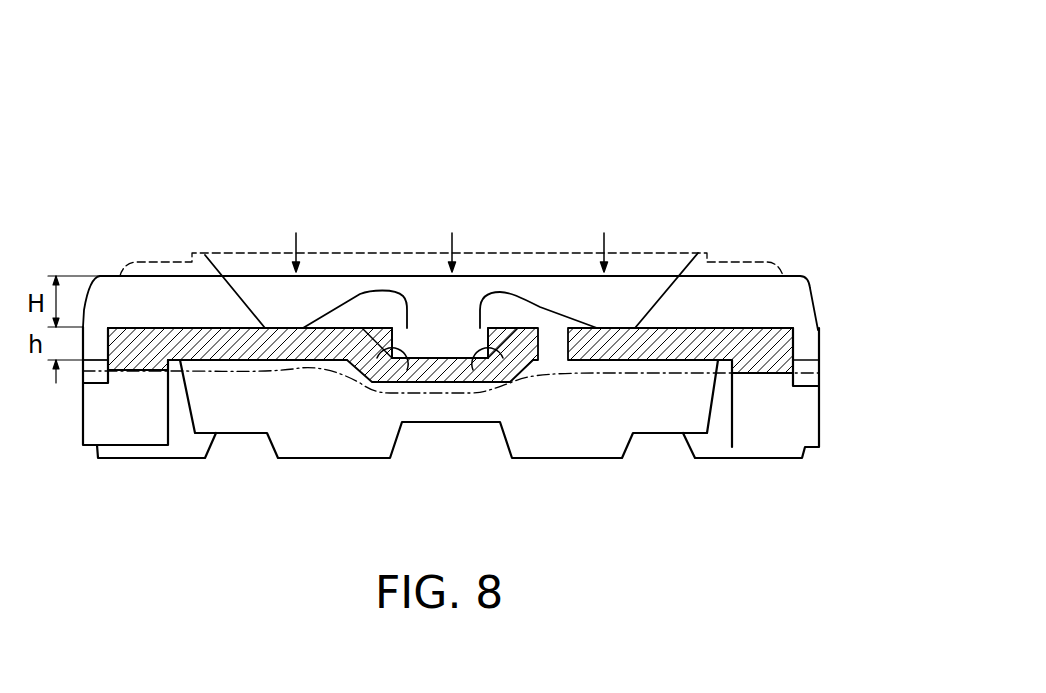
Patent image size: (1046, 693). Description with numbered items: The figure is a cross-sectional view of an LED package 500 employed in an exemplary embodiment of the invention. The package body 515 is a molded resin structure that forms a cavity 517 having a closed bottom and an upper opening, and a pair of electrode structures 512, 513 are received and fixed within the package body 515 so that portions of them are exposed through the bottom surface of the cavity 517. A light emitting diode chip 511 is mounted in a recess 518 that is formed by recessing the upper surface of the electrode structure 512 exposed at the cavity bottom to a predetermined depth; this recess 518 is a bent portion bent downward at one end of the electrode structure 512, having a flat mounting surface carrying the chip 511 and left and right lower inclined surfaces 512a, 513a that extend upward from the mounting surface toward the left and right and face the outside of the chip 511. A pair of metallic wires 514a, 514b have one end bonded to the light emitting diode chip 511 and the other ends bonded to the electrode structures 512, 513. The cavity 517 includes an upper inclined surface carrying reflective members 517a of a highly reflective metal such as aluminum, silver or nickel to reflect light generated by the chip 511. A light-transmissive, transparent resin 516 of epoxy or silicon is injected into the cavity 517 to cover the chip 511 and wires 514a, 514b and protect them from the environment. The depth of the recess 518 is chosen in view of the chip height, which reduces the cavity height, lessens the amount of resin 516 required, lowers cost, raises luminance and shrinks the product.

The LED package 500 is at (582, 148).
The light emitting diode chip 511 is at (435, 338).
The electrode structure 512 is at (262, 350).
The left lower inclined surface 512a is at (407, 342).
The electrode structure 513 is at (653, 362).
The right lower inclined surface 513a is at (483, 343).
The wire 514a is at (350, 290).
The wire 514b is at (541, 287).
The package body 515 is at (790, 300).
The light-transmissive, transparent resin 516 is at (625, 287).
The cavity 517 is at (682, 262).
The reflective member 517a is at (212, 264).
The recess 518 is at (452, 381).